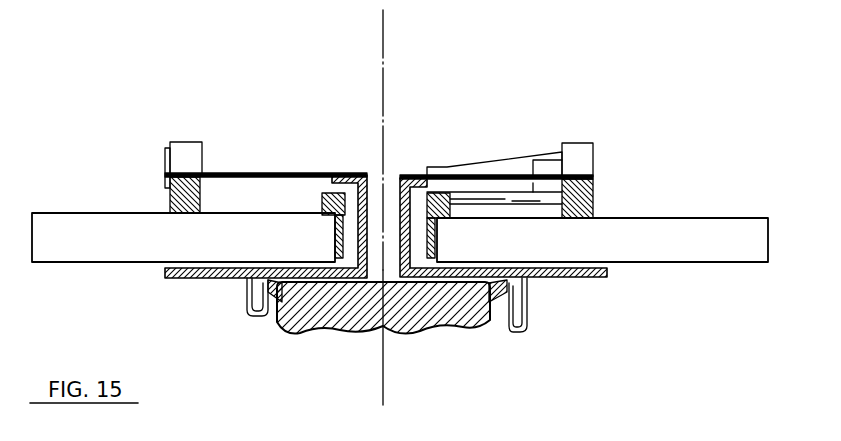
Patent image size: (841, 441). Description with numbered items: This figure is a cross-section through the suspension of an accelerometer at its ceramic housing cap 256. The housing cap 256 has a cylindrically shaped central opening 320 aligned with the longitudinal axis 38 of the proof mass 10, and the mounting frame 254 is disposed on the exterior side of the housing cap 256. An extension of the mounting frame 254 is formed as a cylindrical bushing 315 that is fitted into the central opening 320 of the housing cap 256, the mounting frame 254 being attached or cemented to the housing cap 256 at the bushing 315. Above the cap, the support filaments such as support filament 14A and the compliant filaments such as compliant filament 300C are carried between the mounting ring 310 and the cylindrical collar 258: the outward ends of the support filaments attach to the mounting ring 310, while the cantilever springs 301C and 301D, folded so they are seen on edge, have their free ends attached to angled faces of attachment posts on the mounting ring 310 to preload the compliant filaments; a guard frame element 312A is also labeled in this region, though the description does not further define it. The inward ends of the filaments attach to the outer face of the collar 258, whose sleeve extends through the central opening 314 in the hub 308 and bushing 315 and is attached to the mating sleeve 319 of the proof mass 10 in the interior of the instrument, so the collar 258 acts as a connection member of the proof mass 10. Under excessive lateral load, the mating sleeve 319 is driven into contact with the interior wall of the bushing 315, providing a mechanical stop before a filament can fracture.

The mounting frame 254 is at (161, 179).
The cantilever spring 301C is at (163, 176).
The compliant filament 300C is at (247, 175).
The hub 308 is at (322, 194).
The cylindrical bushing 315 is at (335, 228).
The ceramic housing cap 256 is at (125, 244).
The cylindrical collar 258 is at (398, 180).
The support filament 14A is at (440, 172).
The cantilever spring 301D is at (509, 158).
The mounting ring 310 is at (594, 187).
The central opening 320 is at (438, 239).
The slot 312A is at (512, 198).
The proof mass 10 is at (383, 308).
The mating sleeve 319 is at (303, 303).
The central opening 314 is at (393, 250).
The longitudinal axis 38 is at (384, 357).